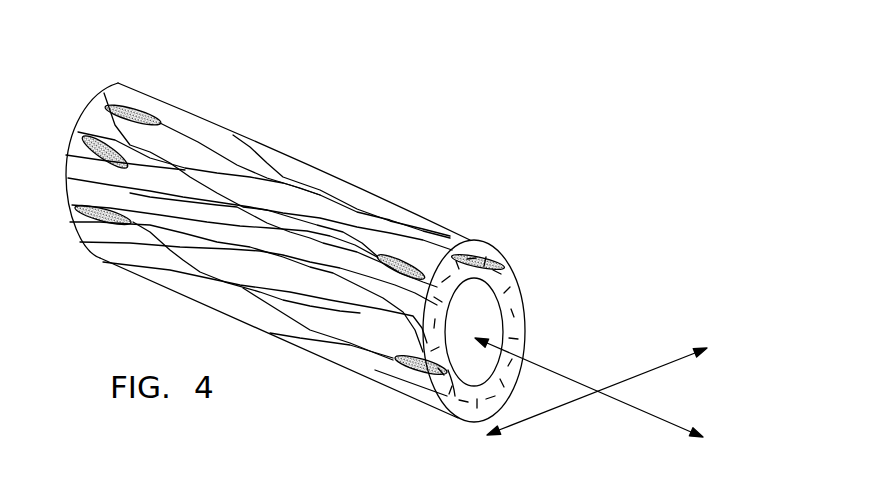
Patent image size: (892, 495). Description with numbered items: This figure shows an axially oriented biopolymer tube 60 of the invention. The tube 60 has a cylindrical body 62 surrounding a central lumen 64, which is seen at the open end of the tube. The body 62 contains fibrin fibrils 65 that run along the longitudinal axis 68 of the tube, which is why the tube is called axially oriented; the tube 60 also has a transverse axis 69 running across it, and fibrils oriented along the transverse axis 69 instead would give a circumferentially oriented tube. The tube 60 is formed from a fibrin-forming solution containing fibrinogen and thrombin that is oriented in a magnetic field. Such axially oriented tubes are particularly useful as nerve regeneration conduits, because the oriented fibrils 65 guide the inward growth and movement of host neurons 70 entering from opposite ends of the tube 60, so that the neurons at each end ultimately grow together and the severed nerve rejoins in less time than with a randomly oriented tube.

The biopolymer tube 60 is at (305, 138).
The cylindrical body 62 is at (367, 190).
The central lumen 64 is at (480, 310).
The fibrin fibrils 65 is at (198, 140).
The longitudinal axis 68 is at (653, 412).
The transverse axis 69 is at (645, 372).
The host neurons 70 is at (407, 263).